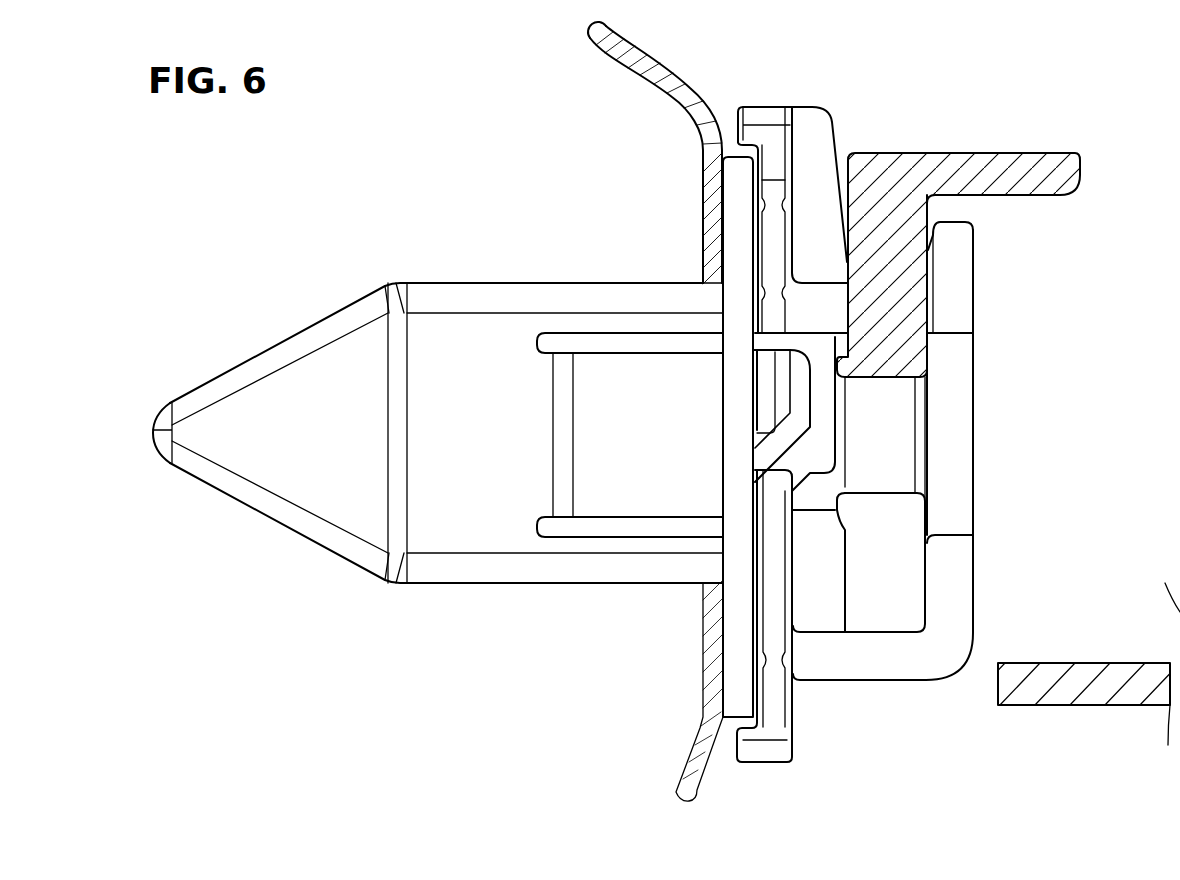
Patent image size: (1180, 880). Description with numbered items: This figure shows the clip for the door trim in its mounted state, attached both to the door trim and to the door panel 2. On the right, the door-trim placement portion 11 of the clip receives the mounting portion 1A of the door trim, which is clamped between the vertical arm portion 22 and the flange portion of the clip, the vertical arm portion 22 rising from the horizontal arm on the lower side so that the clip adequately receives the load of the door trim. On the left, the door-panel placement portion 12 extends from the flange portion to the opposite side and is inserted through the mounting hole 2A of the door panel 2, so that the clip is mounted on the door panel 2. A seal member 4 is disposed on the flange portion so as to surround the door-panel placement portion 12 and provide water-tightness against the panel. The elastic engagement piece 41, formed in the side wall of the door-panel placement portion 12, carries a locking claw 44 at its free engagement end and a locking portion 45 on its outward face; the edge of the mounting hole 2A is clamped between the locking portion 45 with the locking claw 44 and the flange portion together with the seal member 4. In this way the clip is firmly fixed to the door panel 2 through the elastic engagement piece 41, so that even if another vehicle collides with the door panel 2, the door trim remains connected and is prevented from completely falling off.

The mounting portion 1A is at (1027, 155).
The door panel 2 is at (645, 62).
The mounting hole 2A is at (712, 282).
The seal member 4 is at (723, 635).
The door-trim placement portion 11 is at (975, 270).
The door-panel placement portion 12 is at (462, 283).
The vertical arm portion 22 is at (975, 568).
The elastic engagement piece 41 is at (633, 517).
The locking claw 44 is at (793, 390).
The locking portion 45 is at (553, 520).